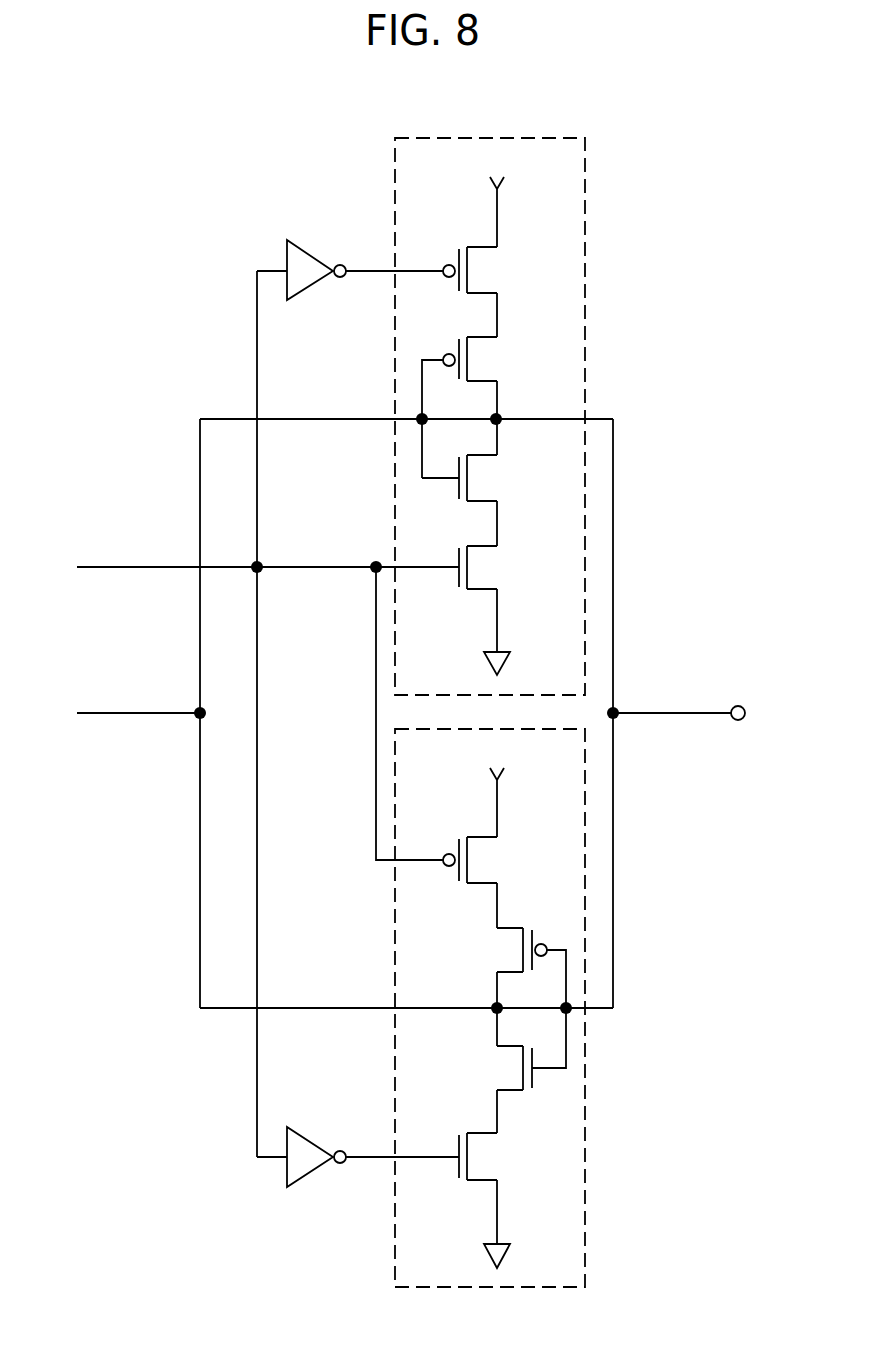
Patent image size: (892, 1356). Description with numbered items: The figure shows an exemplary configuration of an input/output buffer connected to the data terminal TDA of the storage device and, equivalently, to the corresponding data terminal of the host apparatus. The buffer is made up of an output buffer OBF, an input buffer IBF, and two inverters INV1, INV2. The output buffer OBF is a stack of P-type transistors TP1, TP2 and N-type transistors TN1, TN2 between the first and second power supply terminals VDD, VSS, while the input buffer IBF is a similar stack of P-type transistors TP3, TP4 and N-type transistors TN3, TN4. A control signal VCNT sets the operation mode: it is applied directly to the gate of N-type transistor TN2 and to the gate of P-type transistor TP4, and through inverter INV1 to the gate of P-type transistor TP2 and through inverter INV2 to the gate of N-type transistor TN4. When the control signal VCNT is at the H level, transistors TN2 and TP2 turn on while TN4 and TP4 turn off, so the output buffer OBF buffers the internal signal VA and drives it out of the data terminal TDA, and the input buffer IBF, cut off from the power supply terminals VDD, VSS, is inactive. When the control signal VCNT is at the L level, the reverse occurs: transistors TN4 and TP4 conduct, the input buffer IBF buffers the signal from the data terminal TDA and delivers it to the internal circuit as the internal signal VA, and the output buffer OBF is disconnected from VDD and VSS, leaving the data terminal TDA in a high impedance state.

The P-type transistor TP1 is at (483, 407).
The P-type transistor TP2 is at (494, 270).
The P-type transistor TP3 is at (506, 968).
The P-type transistor TP4 is at (494, 860).
The N-type transistor TN1 is at (484, 478).
The N-type transistor TN2 is at (503, 567).
The N-type transistor TN3 is at (506, 1049).
The N-type transistor TN4 is at (503, 1156).
The inverter INV1 is at (350, 257).
The inverter INV2 is at (358, 1143).
The output buffer OBF is at (585, 242).
The input buffer IBF is at (585, 1129).
The first power supply terminal VDD is at (497, 492).
The second power supply terminal VSS is at (495, 935).
The control signal VCNT is at (255, 550).
The internal signal VA is at (134, 696).
The data terminal TDA is at (714, 699).